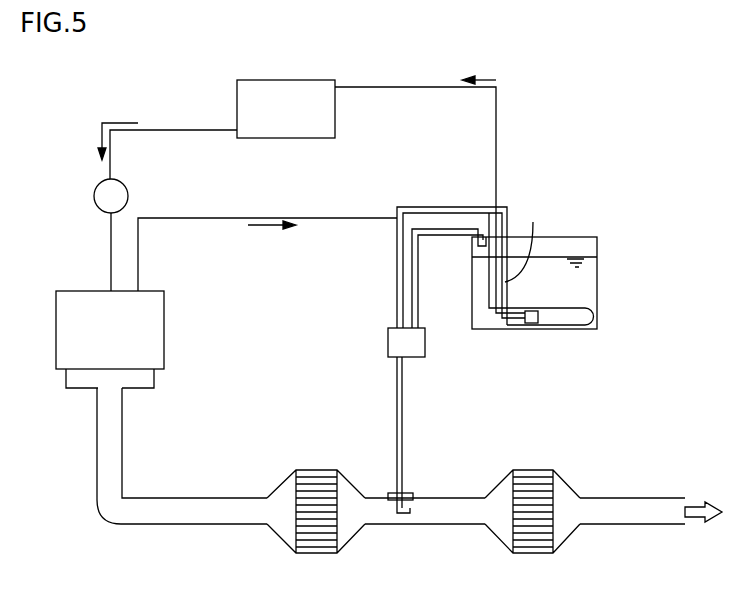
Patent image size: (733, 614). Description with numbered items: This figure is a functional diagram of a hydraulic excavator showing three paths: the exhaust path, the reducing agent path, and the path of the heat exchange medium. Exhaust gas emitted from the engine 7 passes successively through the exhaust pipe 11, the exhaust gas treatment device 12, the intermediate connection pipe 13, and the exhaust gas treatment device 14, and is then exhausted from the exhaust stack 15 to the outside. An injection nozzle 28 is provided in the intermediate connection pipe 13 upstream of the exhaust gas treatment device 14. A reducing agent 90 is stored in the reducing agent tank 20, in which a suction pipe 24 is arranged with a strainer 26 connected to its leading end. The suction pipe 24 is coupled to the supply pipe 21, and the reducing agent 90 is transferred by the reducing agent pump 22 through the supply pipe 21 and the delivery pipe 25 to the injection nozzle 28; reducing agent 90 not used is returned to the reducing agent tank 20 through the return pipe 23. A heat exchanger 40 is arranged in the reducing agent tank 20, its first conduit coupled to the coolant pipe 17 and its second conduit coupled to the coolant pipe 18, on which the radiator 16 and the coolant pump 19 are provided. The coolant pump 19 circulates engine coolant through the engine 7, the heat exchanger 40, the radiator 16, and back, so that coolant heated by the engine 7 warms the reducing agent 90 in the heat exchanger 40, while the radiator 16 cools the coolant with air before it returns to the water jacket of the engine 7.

The engine 7 is at (70, 330).
The exhaust pipe 11 is at (177, 513).
The exhaust gas treatment device 12 is at (316, 540).
The intermediate connection pipe 13 is at (433, 515).
The exhaust gas treatment device 14 is at (537, 545).
The exhaust stack 15 is at (638, 512).
The radiator 16 is at (286, 95).
The coolant pipe 17 is at (203, 222).
The coolant pipe 18 is at (395, 85).
The coolant pump 19 is at (93, 195).
The reducing agent tank 20 is at (598, 266).
The supply pipe 21 is at (397, 279).
The reducing agent pump 22 is at (392, 343).
The return pipe 23 is at (418, 280).
The suction pipe 24 is at (525, 239).
The delivery pipe 25 is at (398, 422).
The strainer 26 is at (532, 325).
The injection nozzle 28 is at (408, 494).
The heat exchanger 40 is at (568, 329).
The reducing agent 90 is at (585, 288).